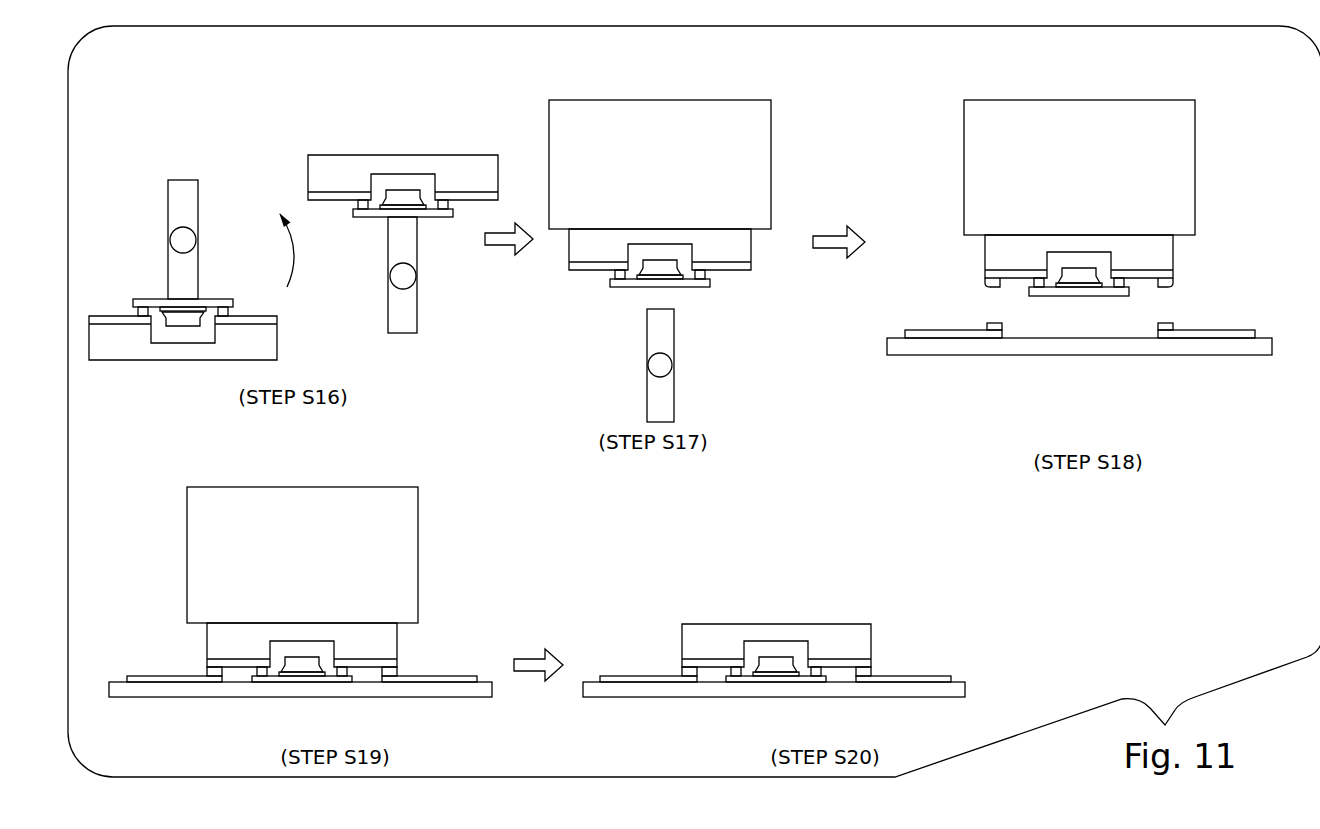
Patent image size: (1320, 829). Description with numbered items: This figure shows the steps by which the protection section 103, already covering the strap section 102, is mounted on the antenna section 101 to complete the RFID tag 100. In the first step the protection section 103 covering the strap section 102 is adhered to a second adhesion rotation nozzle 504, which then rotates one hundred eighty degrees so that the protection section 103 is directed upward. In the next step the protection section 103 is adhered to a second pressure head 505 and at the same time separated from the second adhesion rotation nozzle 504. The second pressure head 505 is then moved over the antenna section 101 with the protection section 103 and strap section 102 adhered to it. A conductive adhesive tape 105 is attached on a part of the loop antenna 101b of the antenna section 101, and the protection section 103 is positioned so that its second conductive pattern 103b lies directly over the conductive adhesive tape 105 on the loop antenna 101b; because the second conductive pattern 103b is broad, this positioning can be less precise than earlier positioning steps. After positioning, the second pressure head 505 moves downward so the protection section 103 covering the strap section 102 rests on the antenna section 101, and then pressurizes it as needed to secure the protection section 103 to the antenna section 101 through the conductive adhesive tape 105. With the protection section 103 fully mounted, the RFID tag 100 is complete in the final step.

The RFID tag 100 is at (722, 573).
The antenna section 101 is at (1035, 363).
The loop antenna 101b is at (935, 330).
The strap section 102 is at (138, 287).
The protection section 103 is at (160, 369).
The second conductive pattern 103b is at (990, 282).
The conductive adhesive tape 105 is at (988, 322).
The second adhesion rotation nozzle 504 is at (168, 203).
The second pressure head 505 is at (677, 100).